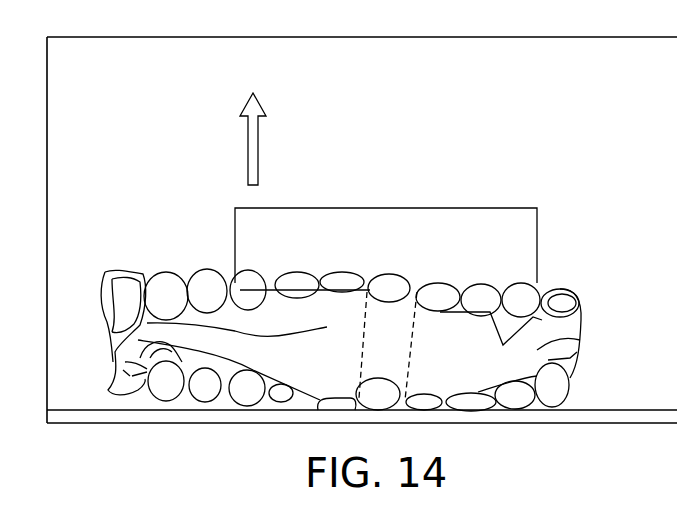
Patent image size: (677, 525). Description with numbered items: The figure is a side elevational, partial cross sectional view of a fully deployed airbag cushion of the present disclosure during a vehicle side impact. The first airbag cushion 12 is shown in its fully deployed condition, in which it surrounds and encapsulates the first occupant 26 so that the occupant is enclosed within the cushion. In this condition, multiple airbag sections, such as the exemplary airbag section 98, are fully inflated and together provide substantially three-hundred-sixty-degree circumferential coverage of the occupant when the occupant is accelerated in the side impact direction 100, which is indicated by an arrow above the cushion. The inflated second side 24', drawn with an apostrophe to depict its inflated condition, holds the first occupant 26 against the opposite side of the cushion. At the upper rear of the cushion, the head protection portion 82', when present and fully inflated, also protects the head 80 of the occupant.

The side impact direction 100 is at (258, 152).
The first airbag cushion 12 is at (486, 167).
The airbag section 98 is at (393, 287).
The first occupant 26 is at (453, 335).
The head protection portion 82' is at (584, 331).
The head 80 is at (568, 338).
The second side 24' is at (304, 427).